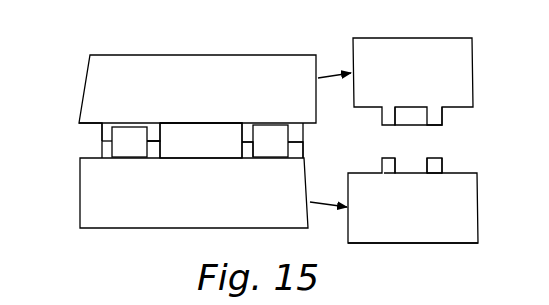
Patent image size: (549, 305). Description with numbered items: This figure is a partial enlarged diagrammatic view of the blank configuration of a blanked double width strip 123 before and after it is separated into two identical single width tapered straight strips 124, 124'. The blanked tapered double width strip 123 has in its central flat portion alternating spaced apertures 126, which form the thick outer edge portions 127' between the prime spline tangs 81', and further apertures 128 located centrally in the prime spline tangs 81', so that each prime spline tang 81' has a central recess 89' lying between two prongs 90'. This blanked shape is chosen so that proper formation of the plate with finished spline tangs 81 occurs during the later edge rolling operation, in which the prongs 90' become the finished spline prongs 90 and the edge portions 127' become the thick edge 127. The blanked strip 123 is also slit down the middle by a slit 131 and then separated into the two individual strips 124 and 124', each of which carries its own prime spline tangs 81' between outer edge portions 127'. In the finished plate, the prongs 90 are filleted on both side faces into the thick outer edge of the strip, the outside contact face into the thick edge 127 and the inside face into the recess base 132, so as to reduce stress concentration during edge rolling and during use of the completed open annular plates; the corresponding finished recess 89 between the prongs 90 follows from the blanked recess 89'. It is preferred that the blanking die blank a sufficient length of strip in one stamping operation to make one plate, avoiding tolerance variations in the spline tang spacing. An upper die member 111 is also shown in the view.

The upper die member 111 is at (423, 38).
The blanked tapered double width strip 123 is at (98, 205).
The single width tapered straight strip 124 is at (411, 137).
The single width tapered straight strip 124' is at (413, 247).
The alternating spaced apertures 126 is at (202, 137).
The thick outer edge portions 127' is at (126, 106).
The thick edge 127 is at (126, 106).
The apertures 128 is at (272, 133).
The slit 131 is at (252, 138).
The recess base 132 is at (258, 158).
The prime spline tangs 81' is at (331, 160).
The finished spline tangs 81 is at (331, 160).
The central recess 89' is at (351, 142).
The recess 89 is at (351, 142).
The prongs 90' is at (282, 174).
The finished spline prongs 90 is at (282, 174).